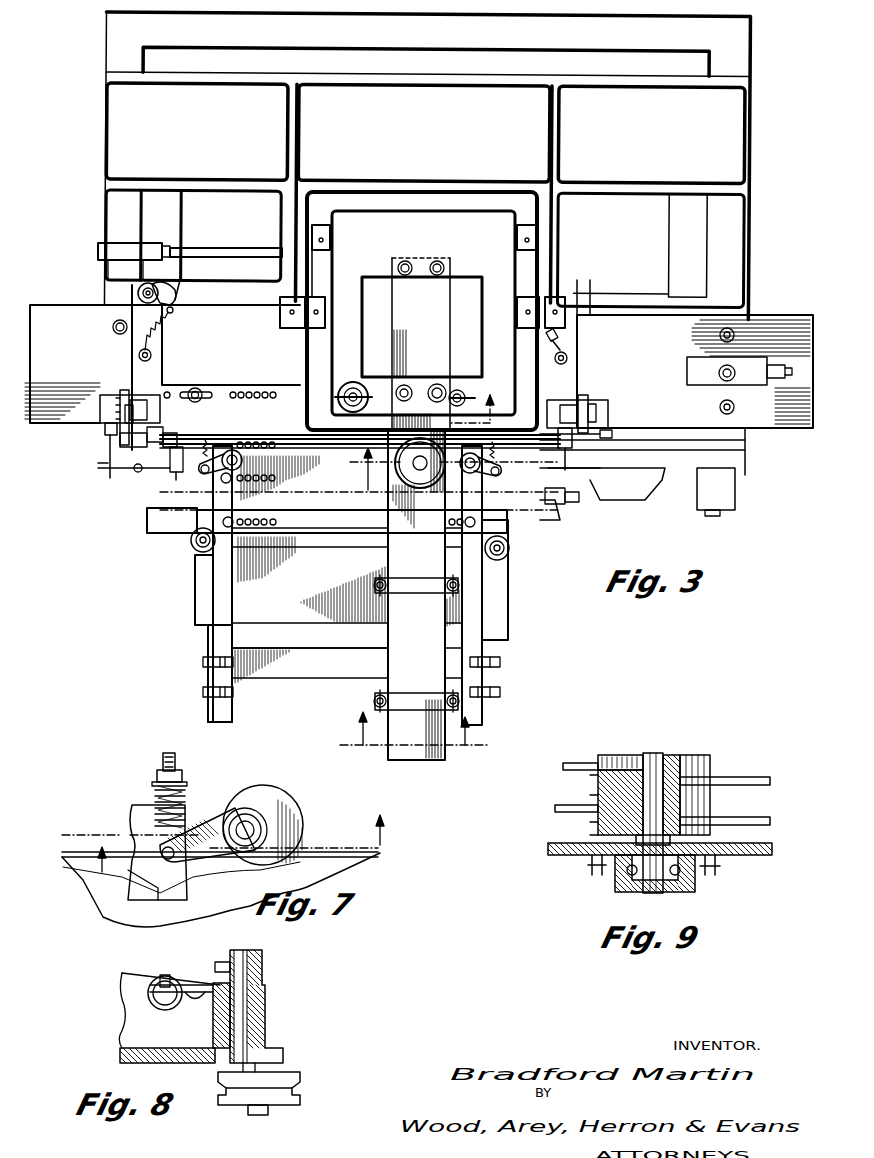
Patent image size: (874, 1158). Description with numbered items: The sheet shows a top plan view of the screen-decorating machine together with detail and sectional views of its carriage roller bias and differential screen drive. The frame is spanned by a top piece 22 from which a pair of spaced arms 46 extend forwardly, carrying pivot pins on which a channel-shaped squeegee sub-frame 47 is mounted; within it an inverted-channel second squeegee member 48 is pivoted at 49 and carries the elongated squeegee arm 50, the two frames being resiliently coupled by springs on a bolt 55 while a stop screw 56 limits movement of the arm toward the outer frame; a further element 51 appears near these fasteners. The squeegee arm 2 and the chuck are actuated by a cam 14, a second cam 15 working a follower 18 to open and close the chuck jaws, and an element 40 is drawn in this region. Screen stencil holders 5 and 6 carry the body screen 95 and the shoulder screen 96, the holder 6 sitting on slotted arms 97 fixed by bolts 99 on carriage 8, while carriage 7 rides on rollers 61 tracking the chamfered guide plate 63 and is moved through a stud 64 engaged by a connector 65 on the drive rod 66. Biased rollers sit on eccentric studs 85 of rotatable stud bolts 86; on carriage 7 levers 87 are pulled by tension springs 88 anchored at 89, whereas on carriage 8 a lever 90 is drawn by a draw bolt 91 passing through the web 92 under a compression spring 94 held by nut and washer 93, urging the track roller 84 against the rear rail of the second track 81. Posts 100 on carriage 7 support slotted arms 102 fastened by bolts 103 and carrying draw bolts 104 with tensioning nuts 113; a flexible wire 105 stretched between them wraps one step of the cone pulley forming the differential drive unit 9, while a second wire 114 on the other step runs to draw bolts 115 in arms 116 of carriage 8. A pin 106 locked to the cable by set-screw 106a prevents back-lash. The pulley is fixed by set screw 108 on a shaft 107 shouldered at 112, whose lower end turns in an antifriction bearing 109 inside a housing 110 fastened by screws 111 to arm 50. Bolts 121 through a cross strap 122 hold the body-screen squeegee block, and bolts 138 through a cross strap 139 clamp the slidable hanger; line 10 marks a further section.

In FIG. 3, the squeegee arm 2 is at (384, 663).
In FIG. 3, the screen stencil holder 5 is at (222, 390).
In FIG. 7, the screen stencil holder 5 is at (150, 895).
In FIG. 8, the screen stencil holder 5 is at (118, 1038).
In FIG. 3, the screen stencil holder 6 is at (208, 650).
In FIG. 3, the carriage 7 is at (278, 390).
In FIG. 3, the carriage 8 is at (335, 540).
In FIG. 7, the carriage 8 is at (241, 850).
In FIG. 3, the differential drive unit 9 is at (428, 515).
In FIG. 9, the differential drive unit 9 is at (712, 755).
In FIG. 3, the section line 10 is at (414, 740).
In FIG. 3, the cam 14 is at (668, 482).
In FIG. 3, the cam 15 is at (625, 500).
In FIG. 3, the follower 18 is at (560, 525).
In FIG. 3, the top piece 22 is at (740, 78).
In FIG. 3, the latch 40 is at (570, 505).
In FIG. 3, the arms 46 is at (280, 236).
In FIG. 3, the squeegee sub-frame 47 is at (500, 195).
In FIG. 3, the second squeegee member 48 is at (385, 215).
In FIG. 3, the pivot 49 is at (332, 240).
In FIG. 3, the squeegee arm 50 is at (392, 345).
In FIG. 9, the squeegee arm 50 is at (560, 843).
In FIG. 3, the stud 51 is at (406, 386).
In FIG. 3, the bolt 55 is at (352, 383).
In FIG. 3, the stop screw 56 is at (460, 390).
In FIG. 3, the rollers 61 is at (172, 285).
In FIG. 3, the guide plate 63 is at (796, 312).
In FIG. 3, the stud 64 is at (108, 270).
In FIG. 3, the connector 65 is at (96, 245).
In FIG. 3, the drive rod 66 is at (228, 250).
In FIG. 3, the second track 81 is at (147, 520).
In FIG. 7, the second track 81 is at (352, 852).
In FIG. 3, the track roller 84 is at (510, 550).
In FIG. 7, the track roller 84 is at (295, 808).
In FIG. 8, the track roller 84 is at (293, 1078).
In FIG. 8, the eccentrically positioned stud 85 is at (268, 1112).
In FIG. 3, the stud bolt 86 is at (138, 294).
In FIG. 8, the stud bolt 86 is at (265, 1010).
In FIG. 3, the lever 87 is at (176, 296).
In FIG. 3, the tension spring 88 is at (172, 325).
In FIG. 3, the spring anchor 89 is at (138, 356).
In FIG. 3, the lever 90 is at (195, 470).
In FIG. 7, the lever 90 is at (218, 815).
In FIG. 8, the lever 90 is at (208, 978).
In FIG. 7, the draw bolt 91 is at (176, 752).
In FIG. 8, the draw bolt 91 is at (175, 975).
In FIG. 7, the web 92 is at (132, 815).
In FIG. 8, the web 92 is at (147, 970).
In FIG. 7, the nut and washer 93 is at (182, 775).
In FIG. 7, the compression spring 94 is at (155, 795).
In FIG. 3, the body screen 95 is at (245, 595).
In FIG. 3, the shoulder screen 96 is at (300, 680).
In FIG. 3, the arms 97 is at (232, 710).
In FIG. 3, the bolts 99 is at (203, 692).
In FIG. 3, the posts 100 is at (140, 395).
In FIG. 3, the arms 102 is at (118, 400).
In FIG. 3, the bolts 103 is at (100, 405).
In FIG. 3, the draw bolts 104 is at (105, 430).
In FIG. 3, the flexible wire 105 is at (290, 430).
In FIG. 9, the flexible wire 105 is at (745, 818).
In FIG. 9, the pin 106 is at (598, 790).
In FIG. 9, the set-screw 106a is at (640, 755).
In FIG. 9, the shaft 107 is at (658, 755).
In FIG. 9, the set screw 108 is at (598, 763).
In FIG. 9, the antifriction bearing 109 is at (690, 893).
In FIG. 9, the housing 110 is at (630, 892).
In FIG. 9, the screws 111 is at (720, 872).
In FIG. 9, the shoulder 112 is at (700, 843).
In FIG. 3, the nuts 113 is at (610, 430).
In FIG. 3, the wire 114 is at (333, 462).
In FIG. 9, the wire 114 is at (745, 778).
In FIG. 3, the draw bolts 115 is at (180, 447).
In FIG. 3, the arms 116 is at (175, 433).
In FIG. 3, the bolts 121 is at (378, 578).
In FIG. 3, the cross strap 122 is at (440, 593).
In FIG. 3, the bolts 138 is at (374, 700).
In FIG. 3, the cross strap 139 is at (440, 693).